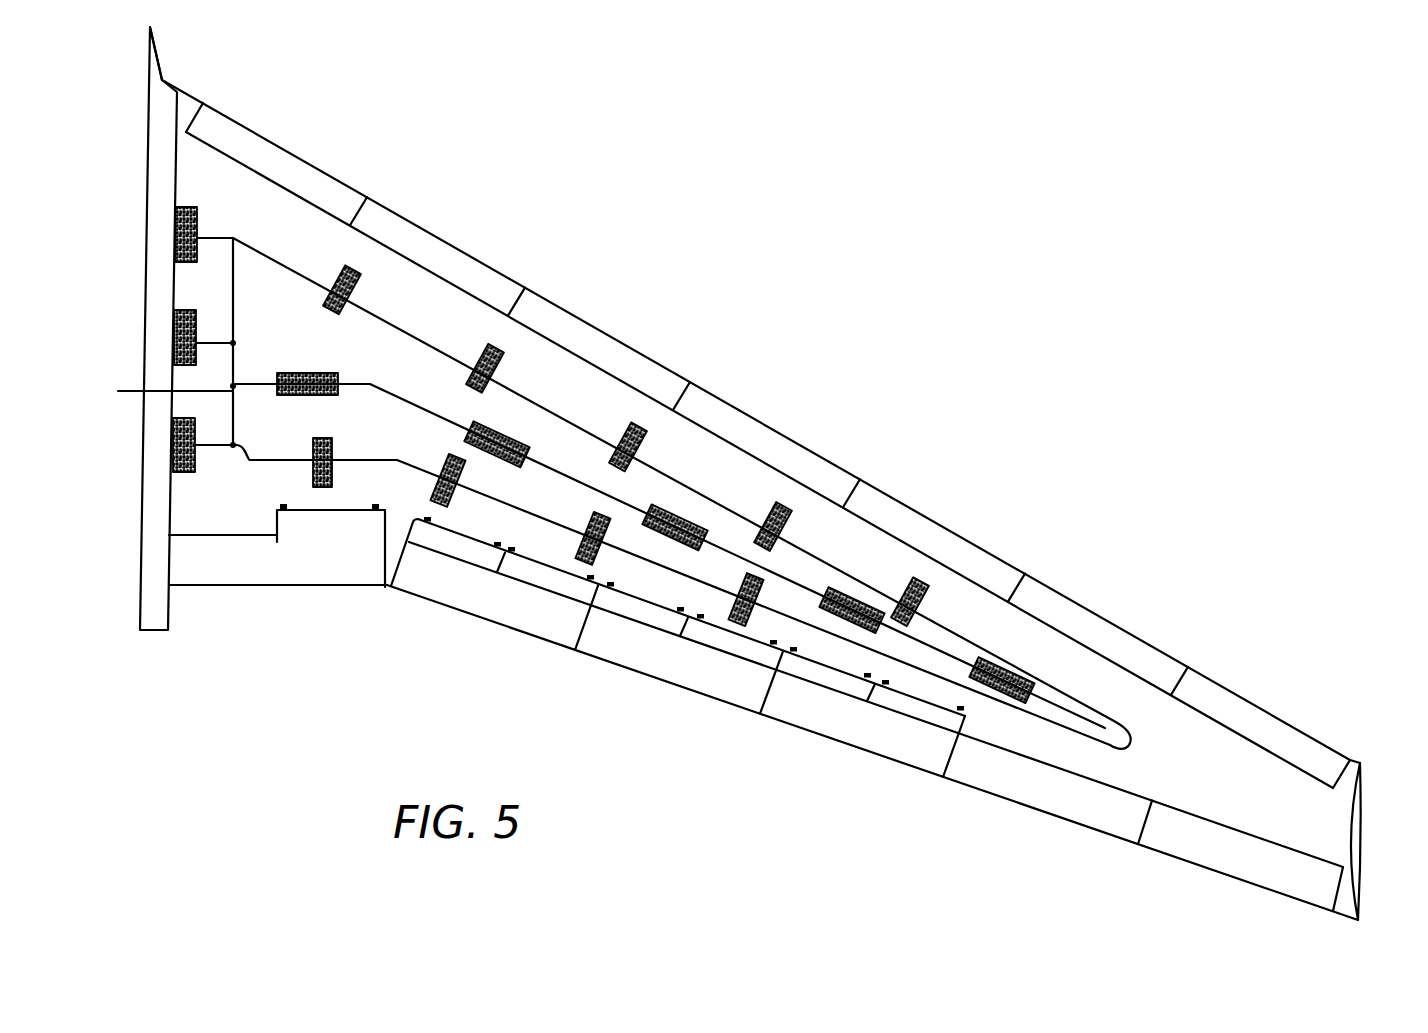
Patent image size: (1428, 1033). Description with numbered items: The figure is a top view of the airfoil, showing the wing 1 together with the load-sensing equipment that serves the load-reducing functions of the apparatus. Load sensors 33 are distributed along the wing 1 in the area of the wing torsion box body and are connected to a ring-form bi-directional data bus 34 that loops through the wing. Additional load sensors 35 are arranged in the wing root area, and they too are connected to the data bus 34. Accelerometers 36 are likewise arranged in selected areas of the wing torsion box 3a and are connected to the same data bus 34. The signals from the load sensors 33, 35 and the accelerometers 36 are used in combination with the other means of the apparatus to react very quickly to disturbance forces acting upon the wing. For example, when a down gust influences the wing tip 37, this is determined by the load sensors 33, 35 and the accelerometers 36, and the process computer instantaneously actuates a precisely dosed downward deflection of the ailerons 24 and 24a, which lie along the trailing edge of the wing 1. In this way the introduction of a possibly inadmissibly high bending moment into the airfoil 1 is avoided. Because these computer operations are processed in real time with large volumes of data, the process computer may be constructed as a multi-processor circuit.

The wing 1 is at (882, 313).
The wing torsion box 3a is at (410, 362).
The aileron 24 is at (1087, 830).
The aileron 24a is at (1243, 885).
The load sensors 33 is at (352, 278).
The ring-form bi-directional data bus 34 is at (270, 252).
The load sensors 35 is at (175, 228).
The accelerometers 36 is at (517, 463).
The wing tip 37 is at (1352, 734).